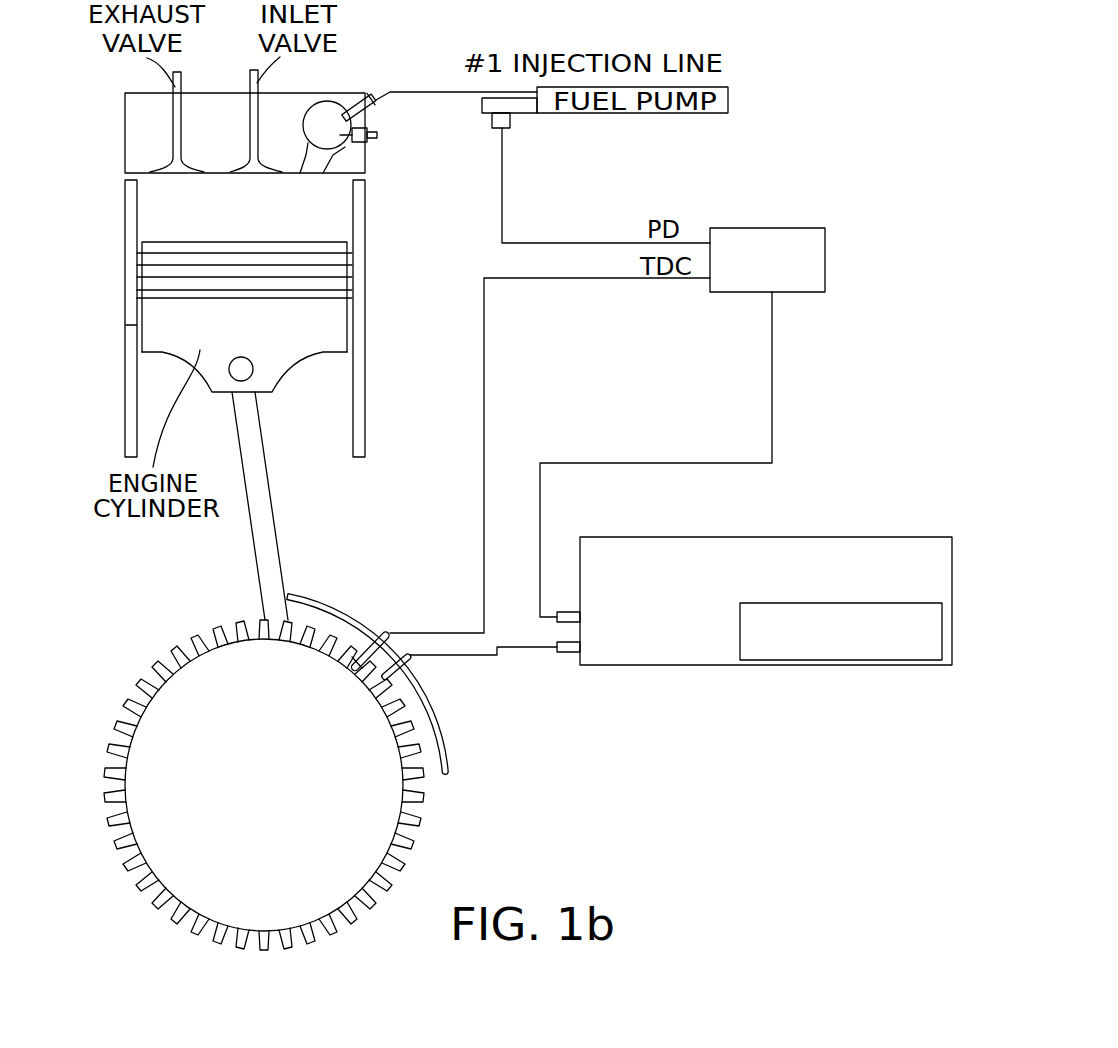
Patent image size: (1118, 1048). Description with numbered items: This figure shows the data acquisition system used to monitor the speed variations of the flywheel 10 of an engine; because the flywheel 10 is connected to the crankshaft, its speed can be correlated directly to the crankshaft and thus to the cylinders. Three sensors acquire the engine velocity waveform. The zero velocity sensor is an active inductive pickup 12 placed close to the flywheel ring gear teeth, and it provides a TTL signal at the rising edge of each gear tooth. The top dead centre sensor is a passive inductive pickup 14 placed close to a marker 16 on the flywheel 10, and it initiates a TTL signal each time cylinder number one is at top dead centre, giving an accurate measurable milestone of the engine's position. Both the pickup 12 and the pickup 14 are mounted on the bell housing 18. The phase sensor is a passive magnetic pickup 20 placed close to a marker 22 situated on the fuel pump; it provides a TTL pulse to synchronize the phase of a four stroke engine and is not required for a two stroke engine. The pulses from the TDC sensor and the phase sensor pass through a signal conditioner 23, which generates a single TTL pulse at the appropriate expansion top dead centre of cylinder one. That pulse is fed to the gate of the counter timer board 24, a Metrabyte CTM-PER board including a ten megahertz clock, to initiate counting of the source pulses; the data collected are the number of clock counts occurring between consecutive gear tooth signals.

The flywheel 10 is at (355, 827).
The active inductive pickup 12 is at (408, 655).
The passive inductive pickup 14 is at (387, 633).
The marker 16 is at (405, 677).
The bell housing 18 is at (443, 748).
The passive magnetic pickup 20 is at (507, 125).
The marker 22 is at (520, 108).
The signal conditioner 23 is at (790, 293).
The counter timer board 24 is at (677, 667).